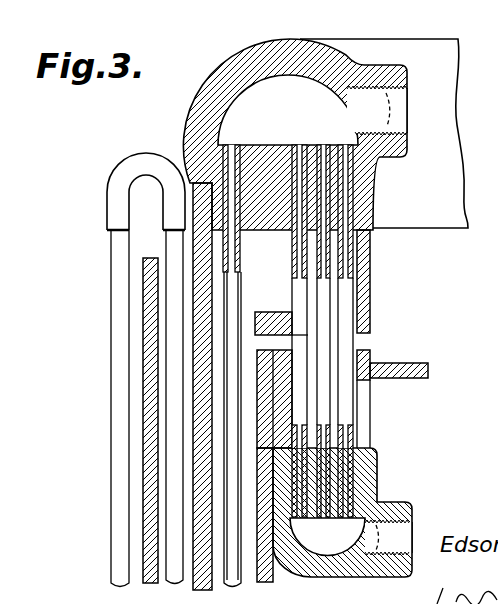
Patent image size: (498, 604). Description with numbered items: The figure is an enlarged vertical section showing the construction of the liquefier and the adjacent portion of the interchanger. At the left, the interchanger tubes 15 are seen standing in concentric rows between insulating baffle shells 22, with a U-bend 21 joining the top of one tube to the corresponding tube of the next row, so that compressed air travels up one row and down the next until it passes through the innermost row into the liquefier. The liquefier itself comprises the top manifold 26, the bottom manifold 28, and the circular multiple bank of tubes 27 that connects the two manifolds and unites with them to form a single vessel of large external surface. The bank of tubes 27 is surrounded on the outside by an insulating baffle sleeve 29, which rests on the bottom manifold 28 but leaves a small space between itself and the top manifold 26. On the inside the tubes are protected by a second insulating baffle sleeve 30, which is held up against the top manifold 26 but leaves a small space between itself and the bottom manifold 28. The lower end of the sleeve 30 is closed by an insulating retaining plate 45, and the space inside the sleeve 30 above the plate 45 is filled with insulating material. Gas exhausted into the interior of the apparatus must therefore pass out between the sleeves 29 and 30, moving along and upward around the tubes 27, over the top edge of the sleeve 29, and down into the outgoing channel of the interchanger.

The interchanger tubes 15 is at (78, 381).
The U-bends 21 is at (137, 170).
The insulating baffle shells 22 is at (147, 443).
The top manifold 26 is at (310, 75).
The bank of tubes 27 is at (344, 327).
The bottom manifold 28 is at (313, 538).
The insulating baffle sleeve 29 is at (283, 398).
The insulating baffle sleeve 30 is at (363, 252).
The insulating retaining plate 45 is at (468, 344).